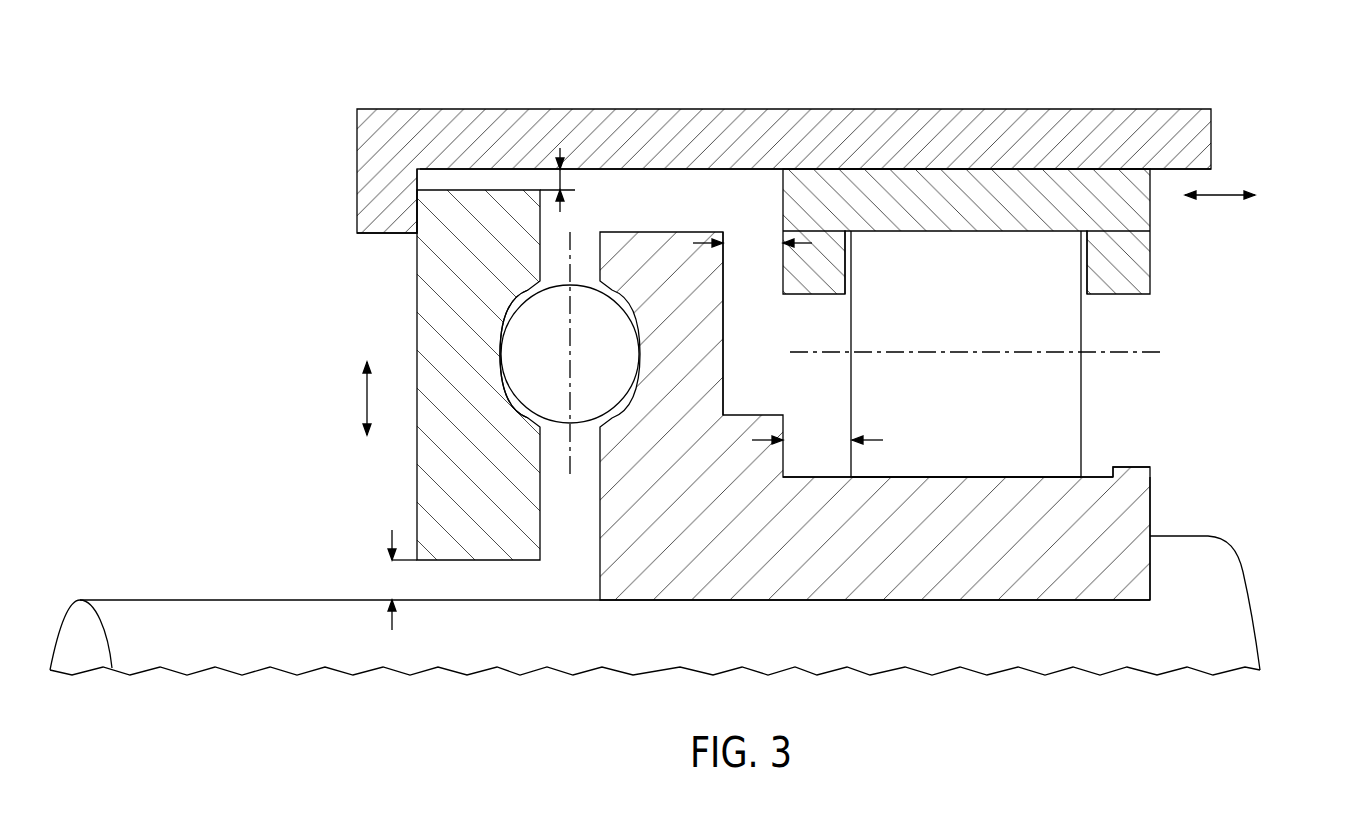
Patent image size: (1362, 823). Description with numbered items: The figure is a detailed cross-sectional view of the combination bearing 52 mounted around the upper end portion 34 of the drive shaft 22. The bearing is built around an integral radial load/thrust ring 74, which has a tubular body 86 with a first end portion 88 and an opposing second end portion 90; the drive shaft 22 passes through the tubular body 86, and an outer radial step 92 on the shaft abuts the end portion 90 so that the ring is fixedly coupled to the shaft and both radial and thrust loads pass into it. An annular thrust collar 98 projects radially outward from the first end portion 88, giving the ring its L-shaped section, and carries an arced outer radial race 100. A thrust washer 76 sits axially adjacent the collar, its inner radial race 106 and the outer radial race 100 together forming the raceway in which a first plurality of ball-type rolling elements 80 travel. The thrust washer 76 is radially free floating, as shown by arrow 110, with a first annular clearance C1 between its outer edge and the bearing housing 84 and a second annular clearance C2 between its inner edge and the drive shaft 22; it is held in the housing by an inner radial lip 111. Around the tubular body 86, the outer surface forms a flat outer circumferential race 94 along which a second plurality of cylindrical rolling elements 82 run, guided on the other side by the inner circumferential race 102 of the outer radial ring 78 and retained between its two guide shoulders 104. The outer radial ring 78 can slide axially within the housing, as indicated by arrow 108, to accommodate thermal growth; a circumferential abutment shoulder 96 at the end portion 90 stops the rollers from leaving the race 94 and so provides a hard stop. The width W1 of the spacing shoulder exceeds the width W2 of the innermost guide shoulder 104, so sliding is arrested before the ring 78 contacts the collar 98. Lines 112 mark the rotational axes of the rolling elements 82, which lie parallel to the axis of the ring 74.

The drive shaft 22 is at (1249, 603).
The upper end portion of drive shaft 34 is at (883, 650).
The combination bearing 52 is at (270, 71).
The integral radial load/thrust ring 74 is at (655, 654).
The thrust washer 76 is at (417, 265).
The outer radial ring 78 is at (784, 153).
The first plurality of rolling elements 80 is at (550, 355).
The second plurality of rolling elements 82 is at (887, 270).
The bearing housing 84 is at (861, 113).
The tubular body 86 is at (993, 520).
The first end portion of tubular body 88 is at (633, 600).
The second end portion of tubular body 90 is at (1126, 600).
The outer radial step 92 is at (1151, 577).
The outer circumferential race 94 is at (911, 476).
The circumferential abutment shoulder 96 is at (1134, 467).
The annular thrust collar 98 is at (673, 262).
The outer radial race 100 is at (625, 408).
The inner circumferential race 102 is at (1025, 232).
The guide shoulders 104 is at (837, 280).
The inner radial race 106 is at (515, 409).
The arrow 108 is at (1220, 198).
The arrow 110 is at (366, 390).
The inner radial lip 111 is at (357, 192).
The lines 112 is at (941, 352).
The first annular clearance C1 is at (563, 184).
The second annular clearance C2 is at (397, 580).
The width of annular spacing shoulder W1 is at (752, 245).
The width of innermost guide shoulder W2 is at (817, 440).